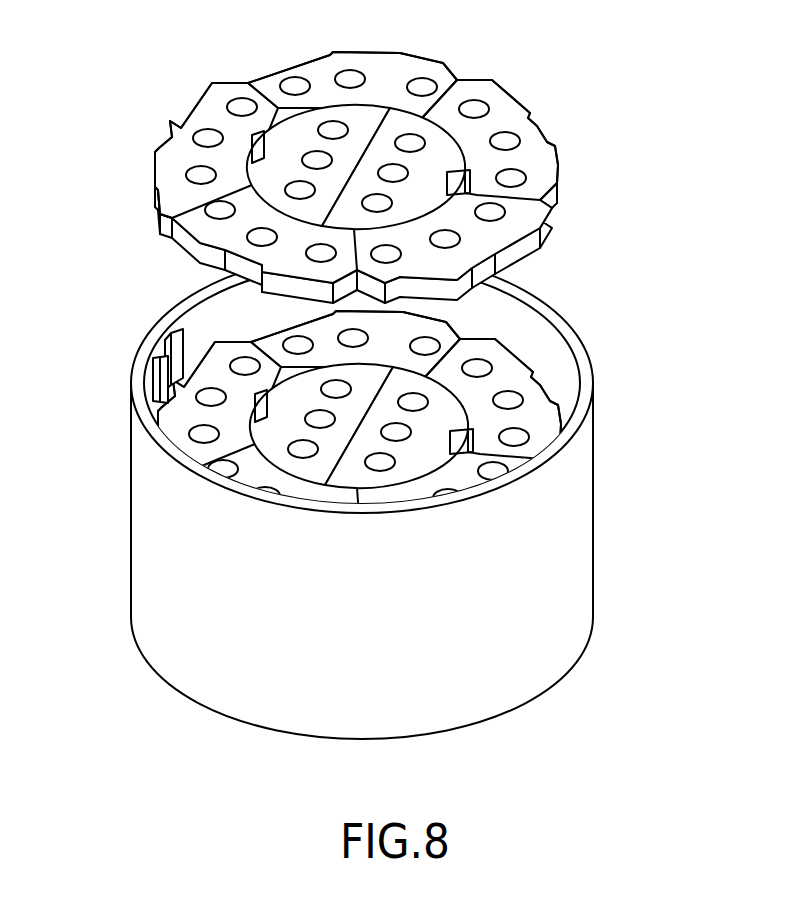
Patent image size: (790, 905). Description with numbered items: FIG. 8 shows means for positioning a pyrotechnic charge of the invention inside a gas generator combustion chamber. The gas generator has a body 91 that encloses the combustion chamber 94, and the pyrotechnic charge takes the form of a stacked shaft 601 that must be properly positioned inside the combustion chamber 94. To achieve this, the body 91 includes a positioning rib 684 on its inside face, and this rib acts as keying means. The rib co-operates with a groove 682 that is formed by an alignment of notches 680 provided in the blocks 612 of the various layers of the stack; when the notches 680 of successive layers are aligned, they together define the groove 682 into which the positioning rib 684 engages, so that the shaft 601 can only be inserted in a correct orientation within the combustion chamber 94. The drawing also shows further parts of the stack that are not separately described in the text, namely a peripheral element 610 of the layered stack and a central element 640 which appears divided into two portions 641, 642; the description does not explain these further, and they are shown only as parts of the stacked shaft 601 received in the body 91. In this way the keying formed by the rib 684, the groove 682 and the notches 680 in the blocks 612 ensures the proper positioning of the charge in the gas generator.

The shaft 601 is at (383, 160).
The central disc 640 is at (367, 124).
The first half disc 641 is at (357, 116).
The second half disc 642 is at (443, 152).
The blocks 612 is at (436, 70).
The outer ring segment 610 is at (564, 178).
The notches 680 is at (172, 128).
The positioning rib 684 is at (175, 356).
The groove 682 is at (153, 394).
The combustion chamber 94 is at (342, 406).
The body 91 is at (578, 539).